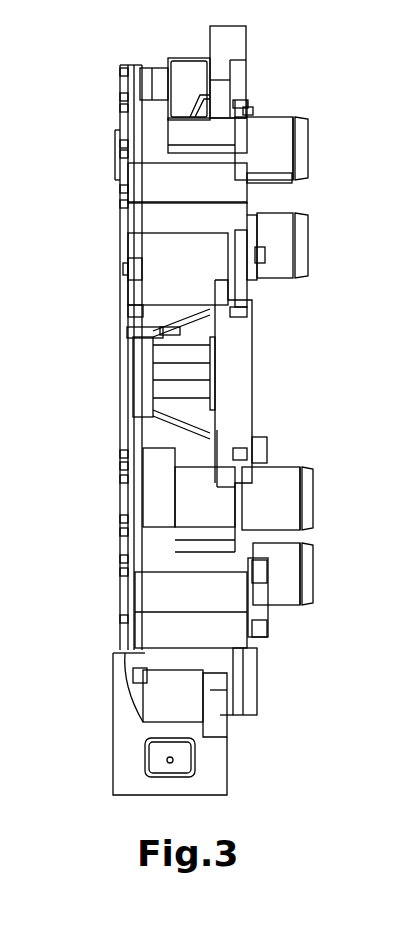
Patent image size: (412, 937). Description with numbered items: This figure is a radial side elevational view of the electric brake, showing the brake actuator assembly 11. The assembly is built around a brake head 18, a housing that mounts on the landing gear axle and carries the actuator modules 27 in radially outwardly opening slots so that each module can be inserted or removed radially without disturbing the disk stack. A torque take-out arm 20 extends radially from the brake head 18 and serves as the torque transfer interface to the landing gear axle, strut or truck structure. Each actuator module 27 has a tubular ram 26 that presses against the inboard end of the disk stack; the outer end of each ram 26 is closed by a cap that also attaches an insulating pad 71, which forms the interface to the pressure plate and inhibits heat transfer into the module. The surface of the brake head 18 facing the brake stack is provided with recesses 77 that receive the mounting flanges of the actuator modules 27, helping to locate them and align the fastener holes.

The brake actuator assembly 11 is at (90, 68).
The brake head 18 is at (160, 695).
The torque take-out arm 20 is at (115, 757).
The ram 26 is at (307, 232).
The actuator module 27 is at (272, 117).
The insulating pad 71 is at (305, 278).
The recess 77 is at (243, 703).